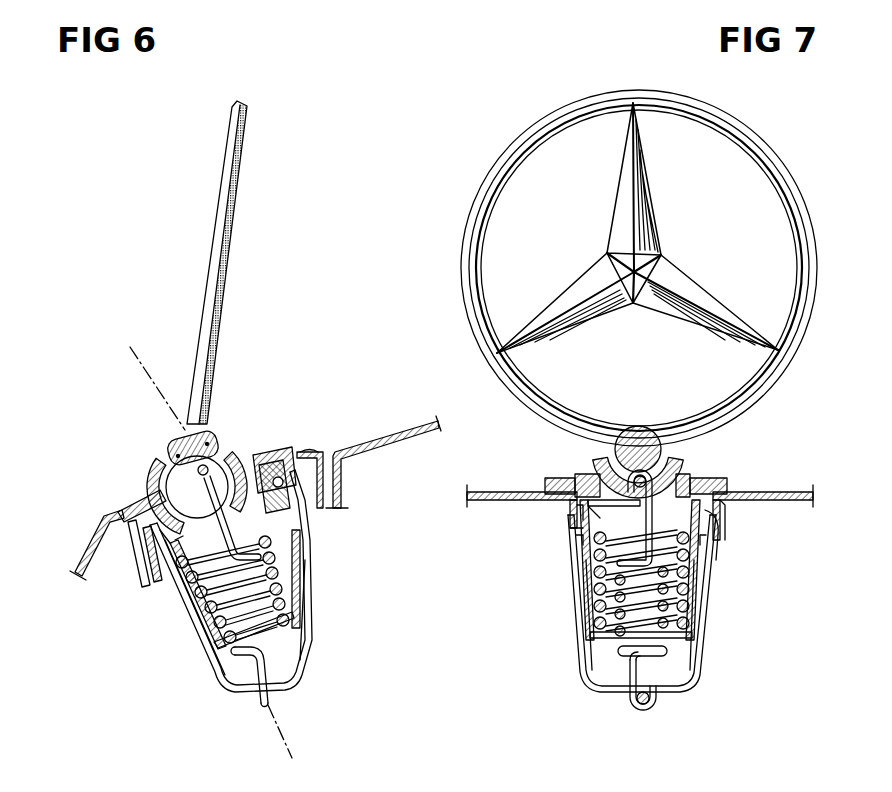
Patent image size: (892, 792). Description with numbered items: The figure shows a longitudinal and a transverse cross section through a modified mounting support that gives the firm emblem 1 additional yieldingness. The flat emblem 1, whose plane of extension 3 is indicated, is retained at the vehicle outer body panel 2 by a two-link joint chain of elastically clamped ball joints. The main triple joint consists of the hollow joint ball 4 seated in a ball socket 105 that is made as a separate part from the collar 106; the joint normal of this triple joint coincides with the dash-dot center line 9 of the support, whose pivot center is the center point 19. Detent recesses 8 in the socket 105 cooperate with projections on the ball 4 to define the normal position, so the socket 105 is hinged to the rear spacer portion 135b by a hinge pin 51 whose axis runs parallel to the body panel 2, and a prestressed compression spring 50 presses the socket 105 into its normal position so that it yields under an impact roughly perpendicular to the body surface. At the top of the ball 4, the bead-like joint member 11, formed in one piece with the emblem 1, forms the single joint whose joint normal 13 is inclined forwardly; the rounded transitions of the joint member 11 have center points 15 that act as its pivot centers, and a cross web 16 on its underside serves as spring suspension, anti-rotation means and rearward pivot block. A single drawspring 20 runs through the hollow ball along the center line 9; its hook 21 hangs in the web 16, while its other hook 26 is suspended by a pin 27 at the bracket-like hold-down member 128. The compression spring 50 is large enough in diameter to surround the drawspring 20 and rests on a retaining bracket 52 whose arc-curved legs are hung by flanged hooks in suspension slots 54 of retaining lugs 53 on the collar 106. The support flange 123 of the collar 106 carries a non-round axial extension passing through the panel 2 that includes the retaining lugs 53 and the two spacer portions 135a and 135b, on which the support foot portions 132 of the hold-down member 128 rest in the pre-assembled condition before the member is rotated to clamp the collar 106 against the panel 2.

In FIG. 6, the firm emblem 1 is at (202, 284).
In FIG. 7, the firm emblem 1 is at (462, 288).
In FIG. 6, the vehicle outer body panel 2 is at (392, 434).
In FIG. 7, the vehicle outer body panel 2 is at (782, 492).
In FIG. 6, the plane of extension 3 is at (228, 221).
In FIG. 6, the joint ball 4 is at (240, 453).
In FIG. 7, the joint ball 4 is at (684, 470).
In FIG. 7, the detent recess 8 is at (574, 521).
In FIG. 6, the center line 9 is at (275, 732).
In FIG. 6, the joint member 11 is at (204, 433).
In FIG. 7, the joint member 11 is at (640, 435).
In FIG. 6, the joint normal 13 is at (158, 362).
In FIG. 6, the center points 15 is at (177, 452).
In FIG. 6, the web 16 is at (170, 473).
In FIG. 7, the web 16 is at (640, 491).
In FIG. 6, the center point 19 is at (210, 472).
In FIG. 6, the drawspring 20 is at (292, 604).
In FIG. 7, the drawspring 20 is at (680, 630).
In FIG. 6, the hook 21 is at (214, 495).
In FIG. 6, the hook 26 is at (268, 690).
In FIG. 6, the pin 27 is at (259, 702).
In FIG. 7, the pin 27 is at (648, 706).
In FIG. 6, the compression spring 50 is at (190, 584).
In FIG. 7, the compression spring 50 is at (588, 597).
In FIG. 6, the hinge pin 51 is at (325, 493).
In FIG. 6, the retaining bracket 52 is at (215, 641).
In FIG. 7, the retaining bracket 52 is at (592, 628).
In FIG. 6, the retaining lugs 53 is at (165, 578).
In FIG. 7, the retaining lugs 53 is at (586, 557).
In FIG. 7, the suspension slots 54 is at (576, 529).
In FIG. 6, the ball socket 105 is at (148, 558).
In FIG. 7, the ball socket 105 is at (717, 529).
In FIG. 6, the collar 106 is at (266, 454).
In FIG. 7, the collar 106 is at (571, 477).
In FIG. 6, the support flange 123 is at (110, 512).
In FIG. 7, the support flange 123 is at (545, 487).
In FIG. 6, the hold-down member 128 is at (178, 625).
In FIG. 7, the hold-down member 128 is at (702, 650).
In FIG. 7, the support foot portions 132 is at (722, 504).
In FIG. 6, the spacer portion 135a is at (143, 534).
In FIG. 6, the spacer portion 135b is at (325, 476).